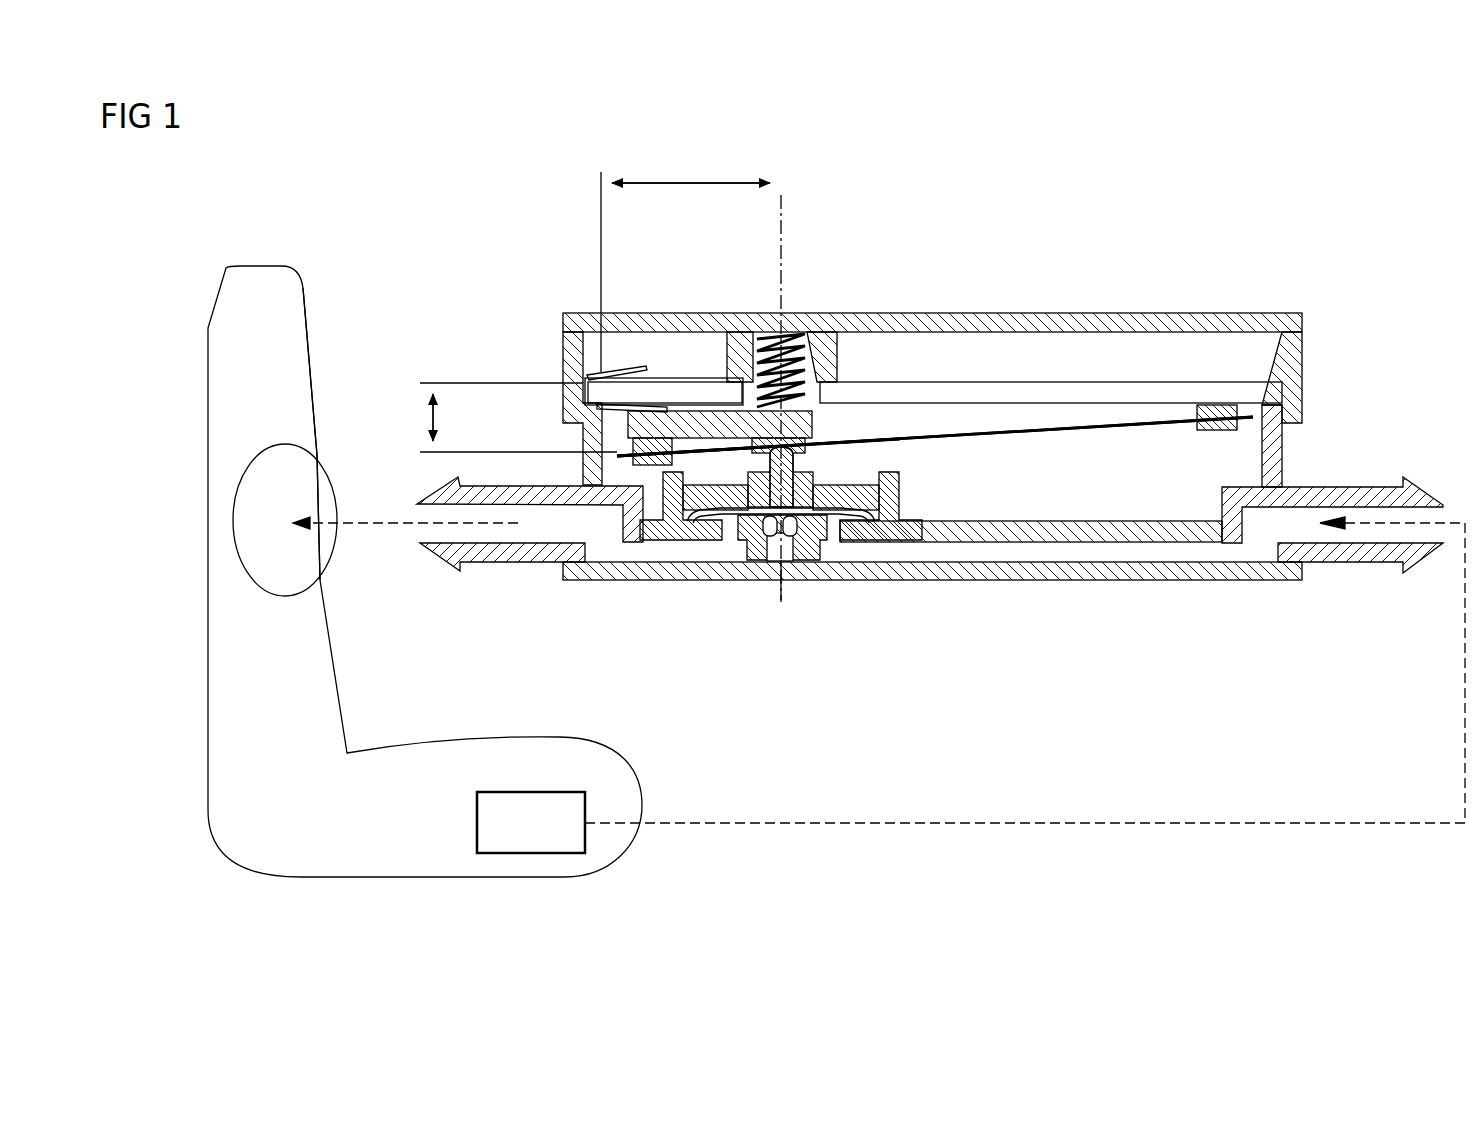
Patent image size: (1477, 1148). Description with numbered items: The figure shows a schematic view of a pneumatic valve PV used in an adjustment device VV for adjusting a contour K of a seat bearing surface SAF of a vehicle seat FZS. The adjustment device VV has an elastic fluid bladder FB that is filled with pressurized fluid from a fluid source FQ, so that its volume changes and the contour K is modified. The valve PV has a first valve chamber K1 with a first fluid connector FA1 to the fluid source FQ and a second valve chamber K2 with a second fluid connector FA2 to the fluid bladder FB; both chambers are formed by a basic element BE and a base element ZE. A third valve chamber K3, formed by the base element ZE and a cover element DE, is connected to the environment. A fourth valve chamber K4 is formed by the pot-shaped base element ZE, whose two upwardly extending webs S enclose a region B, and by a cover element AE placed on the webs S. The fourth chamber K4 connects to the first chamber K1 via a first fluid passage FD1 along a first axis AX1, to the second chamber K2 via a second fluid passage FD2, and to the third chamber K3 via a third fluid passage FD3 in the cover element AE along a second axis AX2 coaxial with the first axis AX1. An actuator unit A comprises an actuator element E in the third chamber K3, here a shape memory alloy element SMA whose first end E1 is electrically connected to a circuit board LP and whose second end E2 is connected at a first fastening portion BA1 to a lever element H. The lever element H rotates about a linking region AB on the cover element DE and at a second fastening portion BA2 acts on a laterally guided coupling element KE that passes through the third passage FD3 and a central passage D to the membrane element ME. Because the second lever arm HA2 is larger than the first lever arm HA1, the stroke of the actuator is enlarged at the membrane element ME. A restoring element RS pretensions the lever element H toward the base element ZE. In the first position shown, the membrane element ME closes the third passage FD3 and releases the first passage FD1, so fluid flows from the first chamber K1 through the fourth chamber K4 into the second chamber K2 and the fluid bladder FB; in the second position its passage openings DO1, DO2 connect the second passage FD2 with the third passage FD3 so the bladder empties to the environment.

The adjustment device VV is at (795, 596).
The vehicle seat FZS is at (223, 333).
The seat bearing surface SAF is at (307, 316).
The fluid bladder FB is at (247, 585).
The contour K is at (316, 451).
The fluid source FQ is at (526, 843).
The pneumatic valve PV is at (930, 399).
The cover element DE is at (1215, 325).
The basic element BE is at (968, 570).
The base element ZE is at (1072, 545).
The second fluid connector FA2 is at (498, 550).
The first fluid connector FA1 is at (1354, 552).
The first valve chamber K1 is at (1020, 552).
The second valve chamber K2 is at (602, 542).
The third valve chamber K3 is at (980, 455).
The actuator unit A is at (1072, 450).
The circuit board LP is at (1143, 393).
The first end E1 is at (1242, 412).
The second end E2 is at (622, 450).
The lever element H is at (678, 407).
The membrane element ME is at (724, 410).
The central passage D is at (743, 390).
The linking region AB is at (590, 362).
The first fastening portion BA1 is at (612, 442).
The second fastening portion BA2 is at (830, 435).
The third fluid passage FD3 is at (812, 412).
The restoring element RS is at (795, 330).
The actuator element E is at (1033, 428).
The shape memory alloy element SMA is at (935, 436).
The coupling element KE is at (815, 493).
The cover element AE is at (862, 494).
The webs S is at (655, 510).
The second fluid passage FD2 is at (728, 510).
The first fluid passage FD1 is at (802, 545).
The passage opening DO1 is at (763, 540).
The passage opening DO2 is at (840, 540).
The fourth valve chamber K4 is at (781, 562).
The region B is at (830, 520).
The first axis AX1 is at (782, 592).
The second axis AX2 is at (781, 197).
The first lever arm HA1 is at (499, 417).
The second lever arm HA2 is at (685, 261).